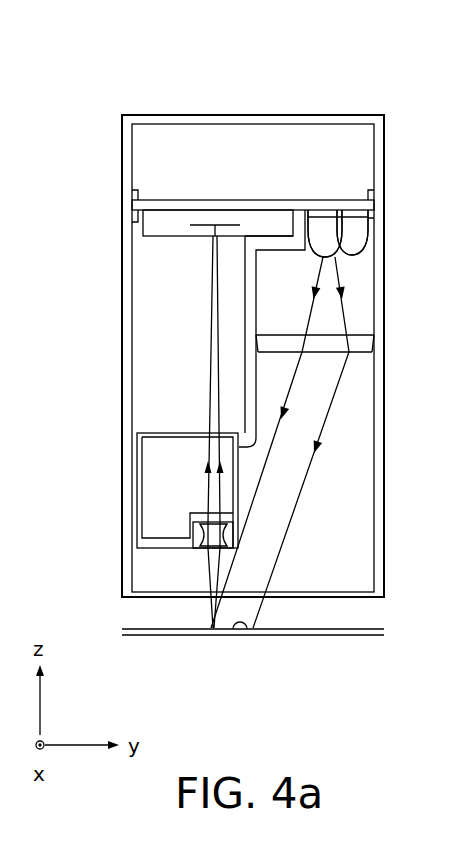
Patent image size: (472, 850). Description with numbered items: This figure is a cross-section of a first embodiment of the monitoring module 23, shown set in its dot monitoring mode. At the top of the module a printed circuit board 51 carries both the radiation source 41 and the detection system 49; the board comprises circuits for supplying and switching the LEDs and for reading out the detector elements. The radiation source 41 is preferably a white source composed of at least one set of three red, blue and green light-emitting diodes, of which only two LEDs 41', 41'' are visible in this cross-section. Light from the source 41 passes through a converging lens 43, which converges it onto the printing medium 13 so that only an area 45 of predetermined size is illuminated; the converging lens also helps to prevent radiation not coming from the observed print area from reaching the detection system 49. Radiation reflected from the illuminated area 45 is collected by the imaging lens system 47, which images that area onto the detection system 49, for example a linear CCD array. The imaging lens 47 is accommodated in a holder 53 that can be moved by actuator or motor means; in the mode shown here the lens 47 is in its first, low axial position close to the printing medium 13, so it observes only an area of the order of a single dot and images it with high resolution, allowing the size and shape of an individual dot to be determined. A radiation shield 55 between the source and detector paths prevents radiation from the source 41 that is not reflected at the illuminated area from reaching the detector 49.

The monitoring module 23 is at (109, 110).
The printed circuit board 51 is at (181, 210).
The radiation source 41 is at (341, 159).
The light-emitting diode 41' is at (377, 245).
The light-emitting diode 41'' is at (395, 232).
The detection system 49 is at (156, 228).
The radiation shield 55 is at (248, 316).
The converging lens 43 is at (360, 346).
The imaging lens system 47 is at (213, 535).
The holder 53 is at (168, 545).
The printing medium 13 is at (155, 636).
The illuminated area 45 is at (249, 636).